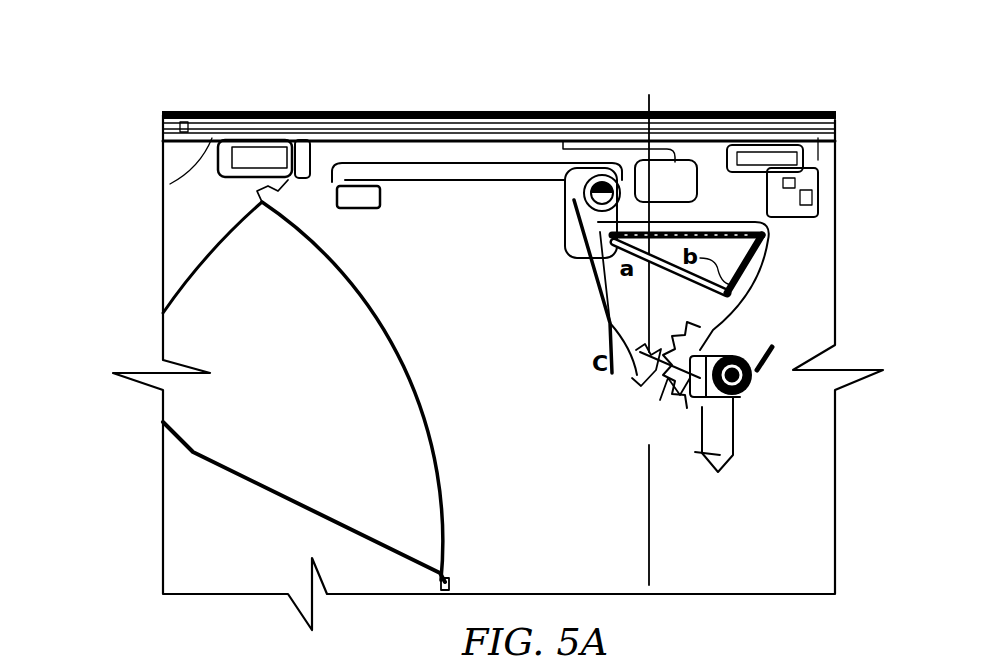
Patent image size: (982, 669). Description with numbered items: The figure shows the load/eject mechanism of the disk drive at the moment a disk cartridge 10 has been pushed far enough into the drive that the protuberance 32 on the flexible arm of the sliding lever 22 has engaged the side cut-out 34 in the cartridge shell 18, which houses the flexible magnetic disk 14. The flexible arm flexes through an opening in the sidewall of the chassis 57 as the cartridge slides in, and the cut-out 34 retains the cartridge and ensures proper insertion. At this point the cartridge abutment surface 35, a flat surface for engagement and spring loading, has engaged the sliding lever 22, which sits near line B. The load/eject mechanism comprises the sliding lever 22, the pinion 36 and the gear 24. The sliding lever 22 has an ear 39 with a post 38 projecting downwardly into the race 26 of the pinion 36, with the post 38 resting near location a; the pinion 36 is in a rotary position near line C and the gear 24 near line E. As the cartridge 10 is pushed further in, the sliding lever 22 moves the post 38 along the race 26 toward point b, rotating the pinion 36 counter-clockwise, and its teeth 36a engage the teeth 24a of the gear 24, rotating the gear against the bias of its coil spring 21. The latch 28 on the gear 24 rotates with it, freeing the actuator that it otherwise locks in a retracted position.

The disk cartridge 10 is at (116, 464).
The chassis 57 is at (545, 103).
The protuberance 32 is at (224, 142).
The side cut-out 34 is at (170, 184).
The abutment surface 35 is at (322, 180).
The sliding lever 22 is at (420, 188).
The ear 39 is at (582, 234).
The post 38 is at (590, 258).
The race 26 is at (768, 246).
The pinion 36 is at (610, 324).
The teeth 36a is at (627, 375).
The gear 24 is at (738, 427).
The teeth 24a is at (659, 410).
The latch 28 is at (712, 458).
The coil spring 21 is at (762, 372).
The flexible magnetic disk 14 is at (334, 428).
The cartridge shell 18 is at (452, 592).